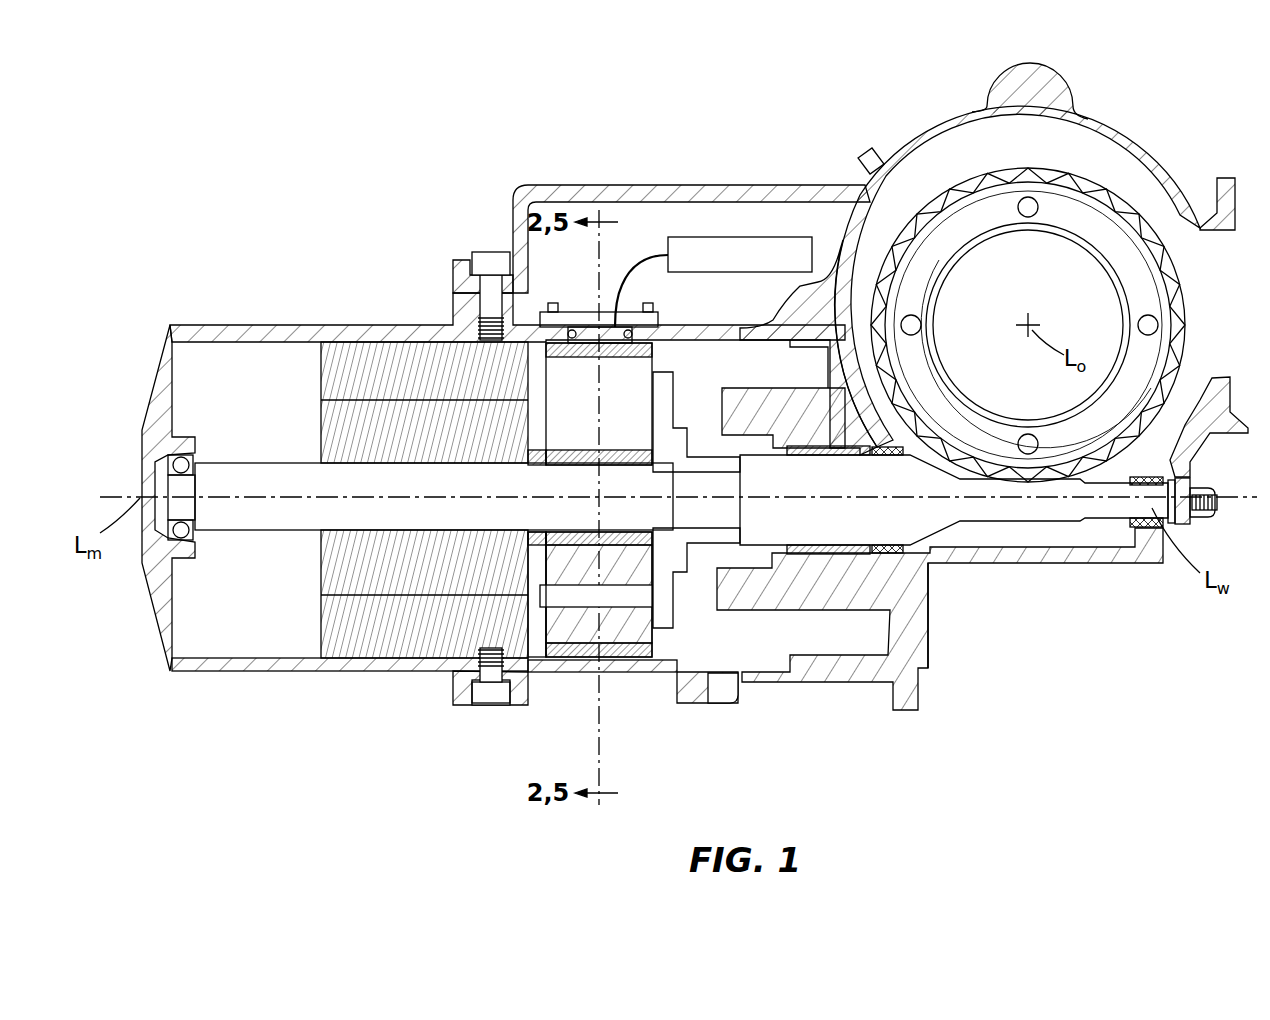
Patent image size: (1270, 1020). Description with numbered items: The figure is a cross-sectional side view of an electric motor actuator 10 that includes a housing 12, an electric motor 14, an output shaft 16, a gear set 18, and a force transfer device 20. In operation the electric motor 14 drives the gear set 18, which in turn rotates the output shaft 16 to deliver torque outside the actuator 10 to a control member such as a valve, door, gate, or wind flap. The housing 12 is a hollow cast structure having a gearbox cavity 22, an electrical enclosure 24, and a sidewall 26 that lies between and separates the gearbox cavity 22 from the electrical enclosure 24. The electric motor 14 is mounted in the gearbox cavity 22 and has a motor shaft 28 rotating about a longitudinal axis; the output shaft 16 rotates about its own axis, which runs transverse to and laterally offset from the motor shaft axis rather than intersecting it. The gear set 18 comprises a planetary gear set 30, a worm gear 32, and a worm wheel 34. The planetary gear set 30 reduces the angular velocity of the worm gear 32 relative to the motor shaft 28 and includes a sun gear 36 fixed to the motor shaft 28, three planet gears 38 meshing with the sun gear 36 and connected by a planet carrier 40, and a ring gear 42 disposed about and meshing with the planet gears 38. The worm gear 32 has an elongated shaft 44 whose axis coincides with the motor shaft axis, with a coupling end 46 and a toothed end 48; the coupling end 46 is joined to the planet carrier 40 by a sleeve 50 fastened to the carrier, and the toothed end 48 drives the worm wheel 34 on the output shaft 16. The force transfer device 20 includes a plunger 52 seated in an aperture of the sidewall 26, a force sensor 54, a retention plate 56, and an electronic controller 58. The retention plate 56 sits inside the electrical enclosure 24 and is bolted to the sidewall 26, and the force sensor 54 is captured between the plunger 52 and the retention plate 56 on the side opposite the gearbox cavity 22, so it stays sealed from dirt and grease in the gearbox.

The electric motor actuator 10 is at (410, 158).
The housing 12 is at (1106, 147).
The electric motor 14 is at (314, 556).
The output shaft 16 is at (1036, 316).
The gear set 18 is at (698, 610).
The force transfer device 20 is at (576, 300).
The gearbox cavity 22 is at (776, 647).
The electrical enclosure 24 is at (642, 212).
The sidewall 26 is at (706, 323).
The motor shaft 28 is at (262, 468).
The planetary gear set 30 is at (617, 668).
The worm gear 32 is at (938, 546).
The worm wheel 34 is at (1190, 308).
The sun gear 36 is at (548, 662).
The planet gears 38 is at (572, 657).
The planet carrier 40 is at (664, 622).
The ring gear 42 is at (587, 645).
The elongated shaft 44 is at (928, 567).
The coupling end 46 is at (774, 490).
The toothed end 48 is at (1085, 513).
The sleeve 50 is at (700, 462).
The plunger 52 is at (613, 338).
The force sensor 54 is at (583, 330).
The retention plate 56 is at (594, 322).
The electronic controller 58 is at (723, 237).